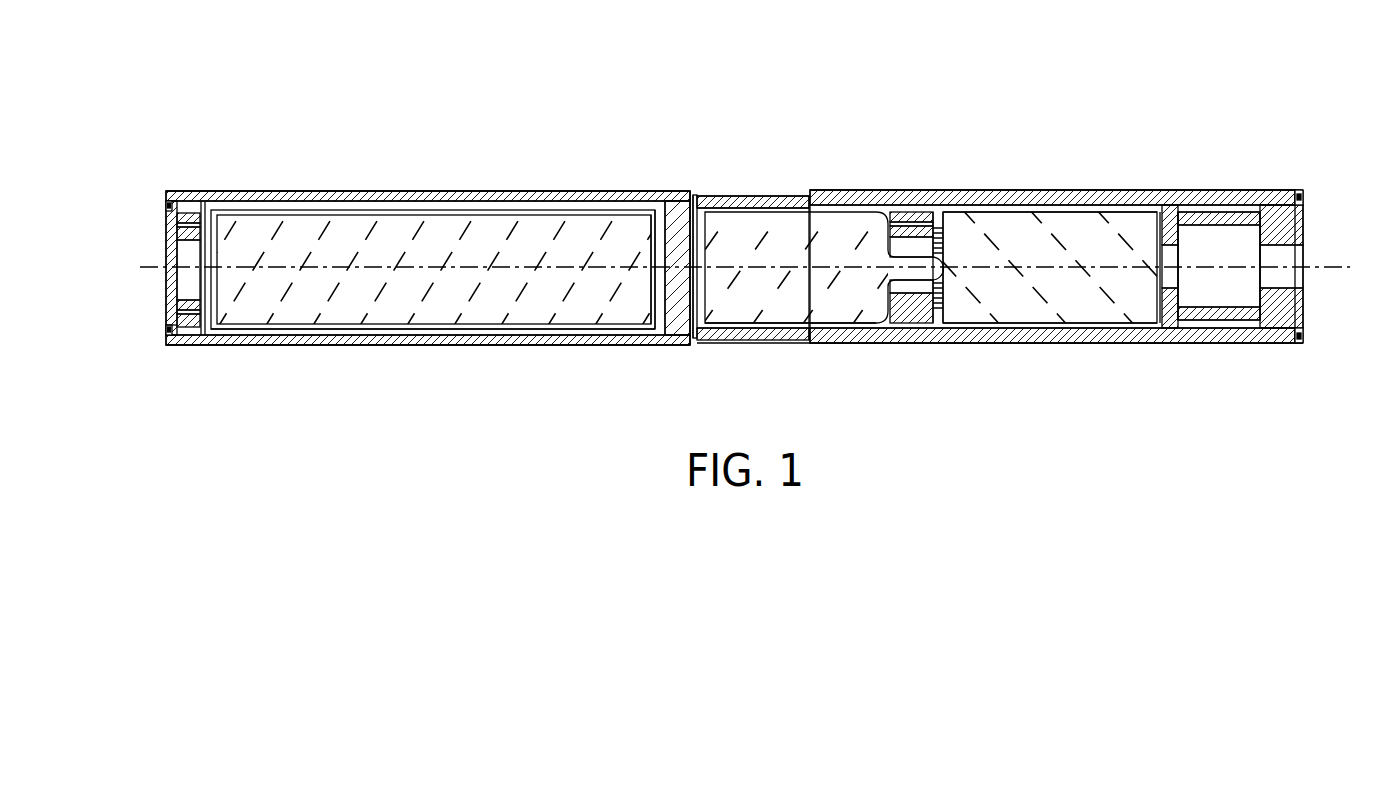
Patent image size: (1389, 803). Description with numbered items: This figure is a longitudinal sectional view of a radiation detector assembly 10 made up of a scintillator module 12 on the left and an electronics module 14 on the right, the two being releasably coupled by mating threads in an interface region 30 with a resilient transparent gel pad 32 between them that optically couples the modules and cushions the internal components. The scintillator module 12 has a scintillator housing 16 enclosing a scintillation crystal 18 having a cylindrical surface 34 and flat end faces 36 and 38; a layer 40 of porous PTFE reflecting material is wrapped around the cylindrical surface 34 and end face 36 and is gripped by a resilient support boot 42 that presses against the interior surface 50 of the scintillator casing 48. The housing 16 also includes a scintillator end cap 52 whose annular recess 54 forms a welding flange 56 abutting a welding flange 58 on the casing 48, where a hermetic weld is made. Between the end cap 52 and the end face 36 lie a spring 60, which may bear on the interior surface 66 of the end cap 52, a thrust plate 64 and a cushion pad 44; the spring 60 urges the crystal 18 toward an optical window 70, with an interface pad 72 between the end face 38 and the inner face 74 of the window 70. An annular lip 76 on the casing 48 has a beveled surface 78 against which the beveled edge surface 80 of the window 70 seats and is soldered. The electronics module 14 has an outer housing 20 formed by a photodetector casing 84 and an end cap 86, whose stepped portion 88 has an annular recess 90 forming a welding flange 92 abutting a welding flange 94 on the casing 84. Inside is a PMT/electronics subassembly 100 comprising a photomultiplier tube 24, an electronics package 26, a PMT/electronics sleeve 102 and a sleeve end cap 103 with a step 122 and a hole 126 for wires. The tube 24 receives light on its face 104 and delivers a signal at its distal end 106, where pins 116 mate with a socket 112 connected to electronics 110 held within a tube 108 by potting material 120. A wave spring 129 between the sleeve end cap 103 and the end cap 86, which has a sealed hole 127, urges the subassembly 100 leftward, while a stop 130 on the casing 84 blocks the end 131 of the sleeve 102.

The radiation detector assembly 10 is at (181, 39).
The scintillator module 12 is at (283, 107).
The electronics module 14 is at (871, 51).
The scintillator housing 16 is at (421, 186).
The scintillation crystal 18 is at (503, 197).
The outer housing 20 is at (1015, 172).
The photomultiplier tube 24 is at (818, 197).
The electronics package 26 is at (982, 191).
The interface region 30 is at (720, 128).
The gel pad 32 is at (695, 192).
The cylindrical surface 34 is at (370, 213).
The end face 36 is at (214, 267).
The end face 38 is at (652, 232).
The layer of reflecting material 40 is at (233, 318).
The support boot 42 is at (544, 198).
The cushion pad 44 is at (209, 196).
The scintillator casing 48 is at (307, 343).
The interior surface 50 is at (467, 333).
The scintillator end cap 52 is at (170, 250).
The annular recess 54 is at (167, 326).
The welding flange 56 is at (165, 206).
The welding flange 58 is at (167, 337).
The spring 60 is at (187, 330).
The thrust plate 64 is at (208, 335).
The interior surface 66 is at (183, 280).
The optical window 70 is at (668, 330).
The interface pad 72 is at (633, 316).
The inner face 74 is at (653, 321).
The annular lip 76 is at (688, 338).
The beveled surface 78 is at (705, 322).
The beveled edge surface 80 is at (691, 192).
The photodetector casing 84 is at (1197, 336).
The electronics module end cap 86 is at (1321, 297).
The stepped portion 88 is at (1291, 186).
The annular recess 90 is at (1305, 197).
The welding flange 92 is at (1305, 336).
The welding flange 94 is at (1302, 344).
The PMT/electronics subassembly 100 is at (941, 346).
The PMT/electronics sleeve 102 is at (811, 328).
The sleeve end cap 103 is at (1171, 320).
The face 104 is at (712, 258).
The distal end 106 is at (865, 318).
The tube 108 is at (1078, 323).
The electronics 110 is at (1030, 313).
The socket 112 is at (923, 210).
The pins 116 is at (897, 210).
The potting material 120 is at (978, 324).
The step 122 is at (1168, 205).
The hole 126 is at (1184, 257).
The hole 127 is at (1316, 257).
The wave spring 129 is at (1215, 212).
The stop 130 is at (750, 246).
The end 131 is at (716, 196).